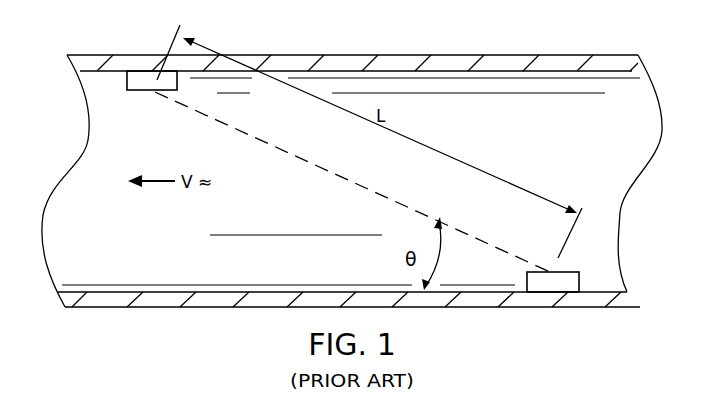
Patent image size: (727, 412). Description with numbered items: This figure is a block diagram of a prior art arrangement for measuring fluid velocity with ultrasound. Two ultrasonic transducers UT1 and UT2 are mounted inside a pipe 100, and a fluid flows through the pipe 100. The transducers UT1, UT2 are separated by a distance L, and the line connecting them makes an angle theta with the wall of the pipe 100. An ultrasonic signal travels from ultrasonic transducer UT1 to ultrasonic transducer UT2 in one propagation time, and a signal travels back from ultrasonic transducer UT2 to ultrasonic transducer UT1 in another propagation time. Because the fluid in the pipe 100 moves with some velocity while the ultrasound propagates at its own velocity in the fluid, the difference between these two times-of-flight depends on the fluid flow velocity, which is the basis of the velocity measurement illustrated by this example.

The pipe 100 is at (456, 62).
The ultrasonic transducer UT1 is at (122, 83).
The ultrasonic transducer UT2 is at (586, 276).